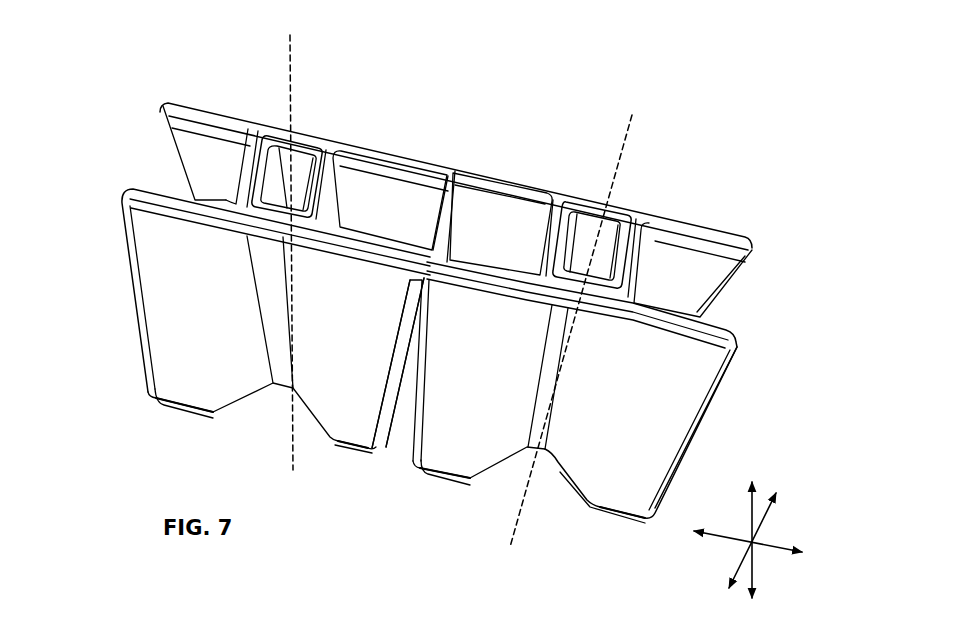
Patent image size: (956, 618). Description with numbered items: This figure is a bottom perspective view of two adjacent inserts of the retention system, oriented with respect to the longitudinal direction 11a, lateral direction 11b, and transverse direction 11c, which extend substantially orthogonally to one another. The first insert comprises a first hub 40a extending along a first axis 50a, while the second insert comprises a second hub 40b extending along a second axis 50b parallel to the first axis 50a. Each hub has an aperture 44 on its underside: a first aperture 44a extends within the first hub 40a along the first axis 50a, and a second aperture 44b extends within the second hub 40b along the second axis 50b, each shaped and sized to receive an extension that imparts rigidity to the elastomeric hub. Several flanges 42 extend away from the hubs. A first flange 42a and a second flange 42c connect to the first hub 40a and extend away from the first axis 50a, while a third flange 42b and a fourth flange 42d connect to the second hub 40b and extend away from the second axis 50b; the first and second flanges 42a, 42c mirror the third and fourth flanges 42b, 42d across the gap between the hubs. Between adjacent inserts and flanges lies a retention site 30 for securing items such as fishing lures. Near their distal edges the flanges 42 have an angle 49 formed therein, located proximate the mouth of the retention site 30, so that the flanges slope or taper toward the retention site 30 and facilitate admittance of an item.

The longitudinal direction 11a is at (750, 517).
The lateral direction 11b is at (772, 553).
The transverse direction 11c is at (770, 513).
The retention site 30 is at (394, 440).
The first hub 40a is at (263, 277).
The second hub 40b is at (557, 383).
The flange 42 is at (230, 165).
The first flange 42a is at (381, 227).
The third flange 42b is at (482, 237).
The second flange 42c is at (333, 340).
The fourth flange 42d is at (469, 390).
The aperture 44 is at (503, 178).
The first aperture 44a is at (304, 150).
The second aperture 44b is at (614, 218).
The angle 49 is at (184, 404).
The first axis 50a is at (290, 92).
The second axis 50b is at (617, 158).